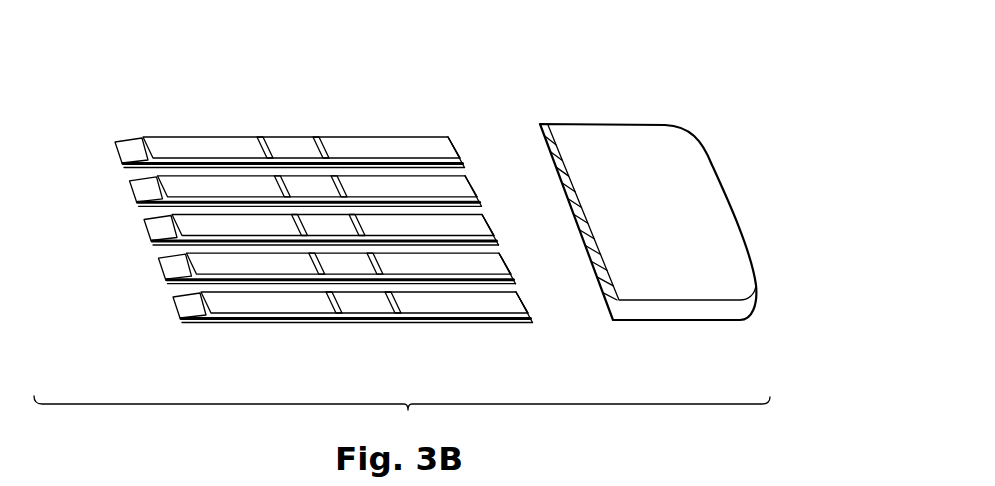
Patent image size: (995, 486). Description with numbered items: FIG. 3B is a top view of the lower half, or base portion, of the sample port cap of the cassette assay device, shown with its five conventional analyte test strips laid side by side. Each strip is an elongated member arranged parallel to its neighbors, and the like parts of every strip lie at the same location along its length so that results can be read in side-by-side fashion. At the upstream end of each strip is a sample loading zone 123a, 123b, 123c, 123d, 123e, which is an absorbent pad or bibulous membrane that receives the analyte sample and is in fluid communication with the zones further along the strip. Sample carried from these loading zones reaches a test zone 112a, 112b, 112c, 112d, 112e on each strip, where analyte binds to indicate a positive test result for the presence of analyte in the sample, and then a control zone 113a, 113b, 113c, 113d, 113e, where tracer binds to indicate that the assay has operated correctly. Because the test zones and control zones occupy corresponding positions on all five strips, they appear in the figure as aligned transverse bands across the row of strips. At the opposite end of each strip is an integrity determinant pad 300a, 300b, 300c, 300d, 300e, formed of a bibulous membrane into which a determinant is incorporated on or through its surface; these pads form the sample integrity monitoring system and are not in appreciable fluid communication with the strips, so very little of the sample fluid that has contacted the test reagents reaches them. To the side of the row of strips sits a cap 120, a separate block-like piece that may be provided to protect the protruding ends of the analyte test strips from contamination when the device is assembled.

The integrity determinant pad 300a is at (128, 148).
The integrity determinant pad 300b is at (140, 192).
The integrity determinant pad 300c is at (155, 226).
The integrity determinant pad 300d is at (168, 266).
The integrity determinant pad 300e is at (182, 307).
The test zone 112a is at (272, 156).
The test zone 112b is at (283, 192).
The test zone 112c is at (301, 230).
The test zone 112d is at (315, 263).
The test zone 112e is at (333, 309).
The control zone 113a is at (315, 140).
The control zone 113b is at (346, 194).
The control zone 113c is at (366, 232).
The control zone 113d is at (378, 258).
The control zone 113e is at (385, 305).
The sample loading zone 123a is at (452, 148).
The sample loading zone 123b is at (469, 187).
The sample loading zone 123c is at (486, 225).
The sample loading zone 123d is at (503, 264).
The sample loading zone 123e is at (520, 303).
The cap 120 is at (667, 213).